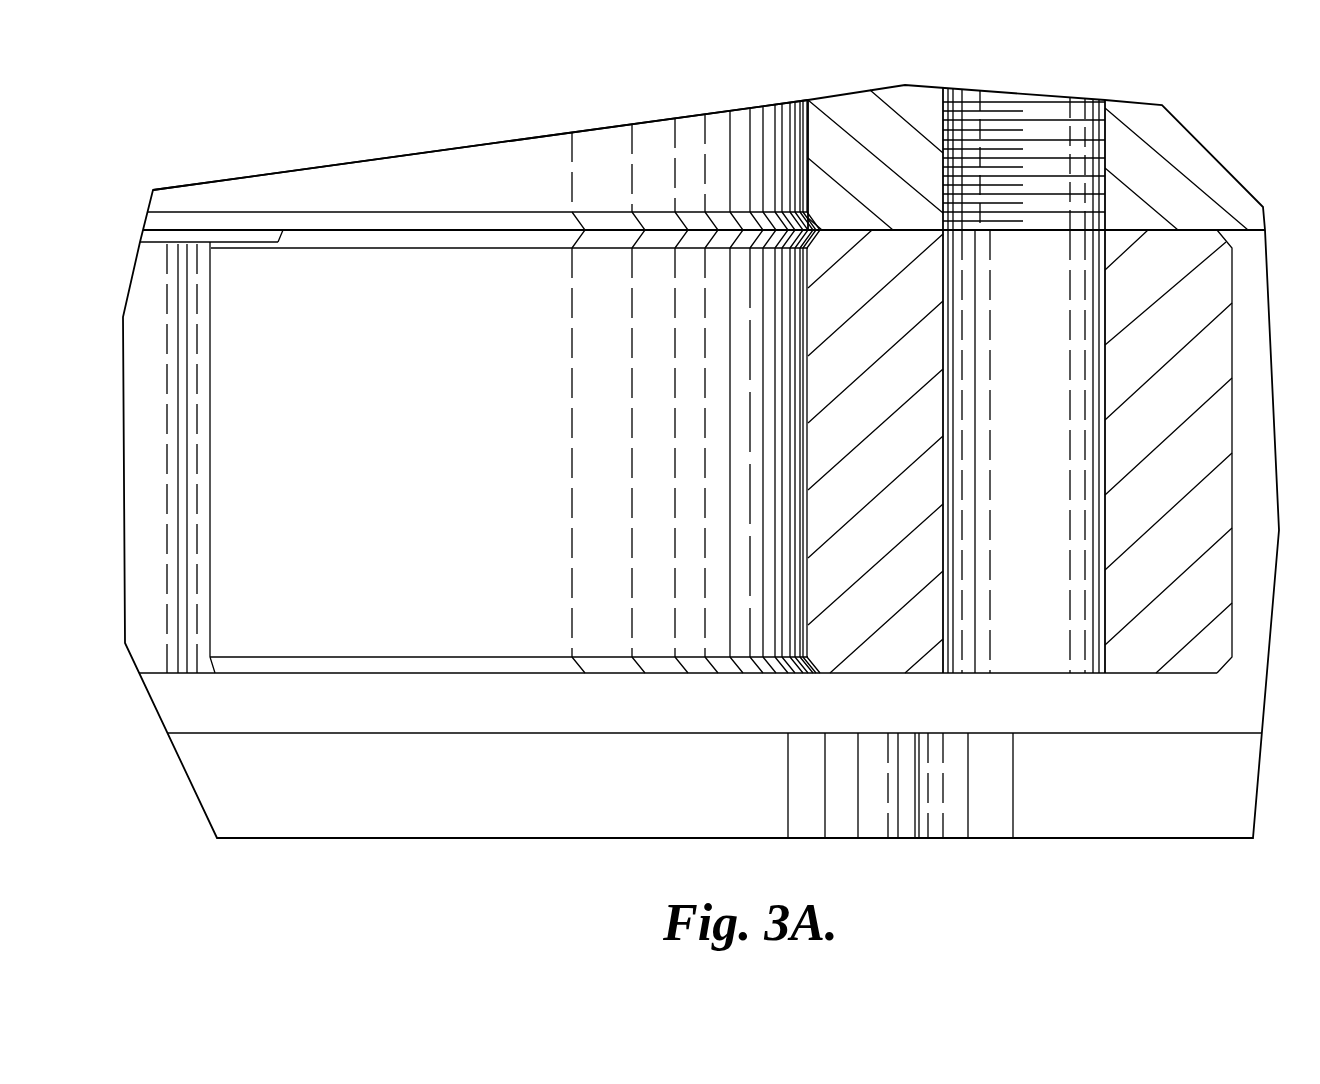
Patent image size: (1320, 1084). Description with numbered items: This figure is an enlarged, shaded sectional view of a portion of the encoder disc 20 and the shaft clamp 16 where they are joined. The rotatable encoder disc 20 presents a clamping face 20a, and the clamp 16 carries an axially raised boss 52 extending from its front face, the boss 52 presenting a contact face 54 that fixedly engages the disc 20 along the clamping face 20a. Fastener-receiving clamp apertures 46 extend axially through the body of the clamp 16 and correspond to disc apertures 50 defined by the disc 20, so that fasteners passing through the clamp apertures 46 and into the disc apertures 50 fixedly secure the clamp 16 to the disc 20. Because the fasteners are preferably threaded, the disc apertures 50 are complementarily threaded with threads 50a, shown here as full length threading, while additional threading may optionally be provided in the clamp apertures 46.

The shaft clamp 16 is at (878, 640).
The encoder disc 20 is at (860, 122).
The clamping face 20a is at (343, 230).
The clamp apertures 46 is at (1040, 640).
The disc apertures 50 is at (1062, 118).
The threads 50a is at (997, 152).
The axially raised boss 52 is at (503, 240).
The contact face 54 is at (395, 230).